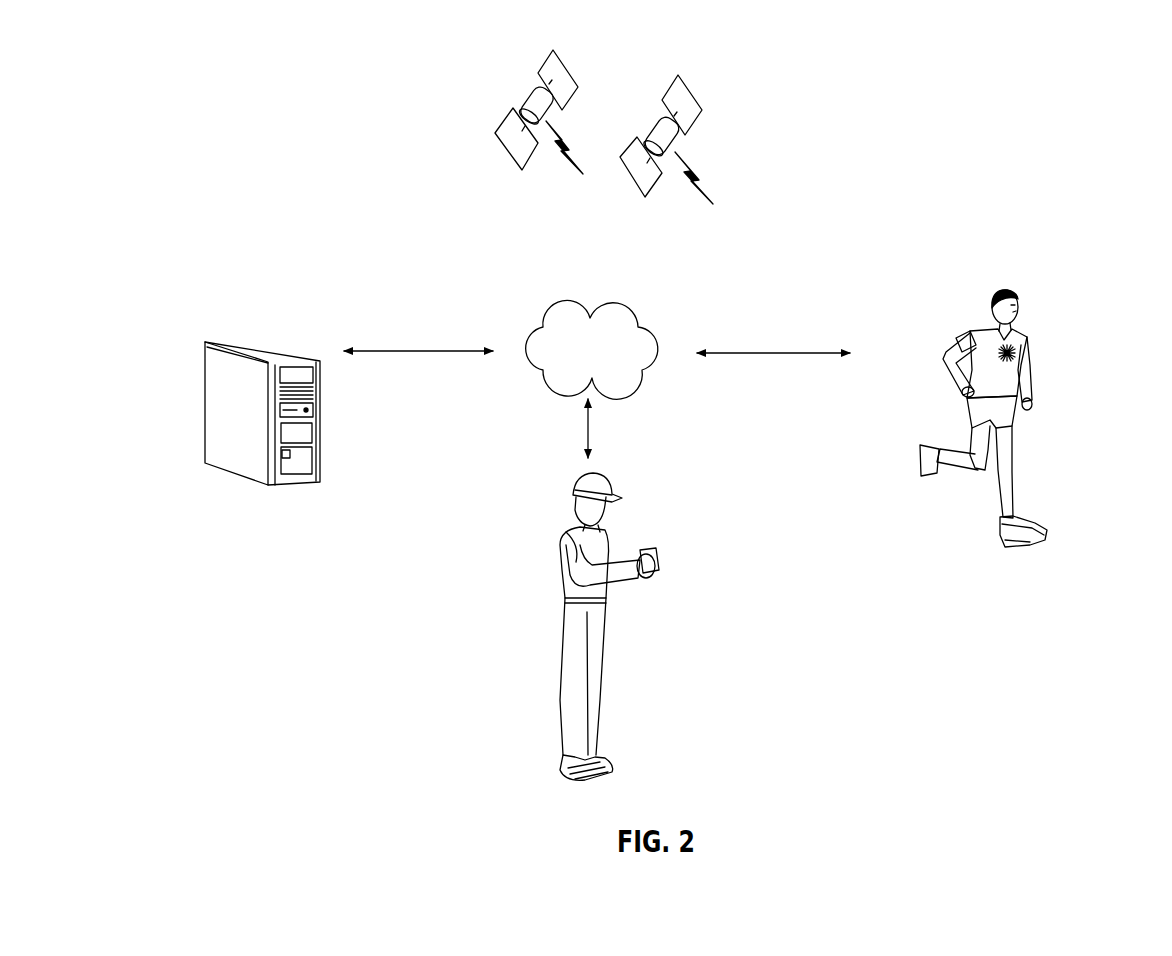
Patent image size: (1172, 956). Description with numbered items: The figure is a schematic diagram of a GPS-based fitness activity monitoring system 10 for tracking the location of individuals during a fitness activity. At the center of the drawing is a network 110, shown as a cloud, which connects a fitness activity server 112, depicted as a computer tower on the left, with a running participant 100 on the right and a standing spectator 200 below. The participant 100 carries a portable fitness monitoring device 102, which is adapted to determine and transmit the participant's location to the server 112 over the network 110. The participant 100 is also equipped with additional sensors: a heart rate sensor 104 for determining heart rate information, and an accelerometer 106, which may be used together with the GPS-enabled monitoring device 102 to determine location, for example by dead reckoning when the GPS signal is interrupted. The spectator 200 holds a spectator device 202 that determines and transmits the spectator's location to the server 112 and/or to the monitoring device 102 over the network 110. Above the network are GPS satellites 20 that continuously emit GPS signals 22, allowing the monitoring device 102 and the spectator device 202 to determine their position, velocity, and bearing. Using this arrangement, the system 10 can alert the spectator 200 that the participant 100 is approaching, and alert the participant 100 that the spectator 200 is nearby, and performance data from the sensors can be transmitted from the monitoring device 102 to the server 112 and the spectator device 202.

The system 10 is at (199, 194).
The GPS satellites 20 is at (567, 80).
The GPS signals 22 is at (563, 138).
The participant 100 is at (1010, 290).
The portable fitness monitoring device 102 is at (970, 327).
The heart rate sensor 104 is at (1020, 353).
The accelerometer 106 is at (1036, 503).
The network 110 is at (623, 298).
The fitness activity server 112 is at (268, 340).
The spectator 200 is at (558, 556).
The spectator device 202 is at (660, 565).